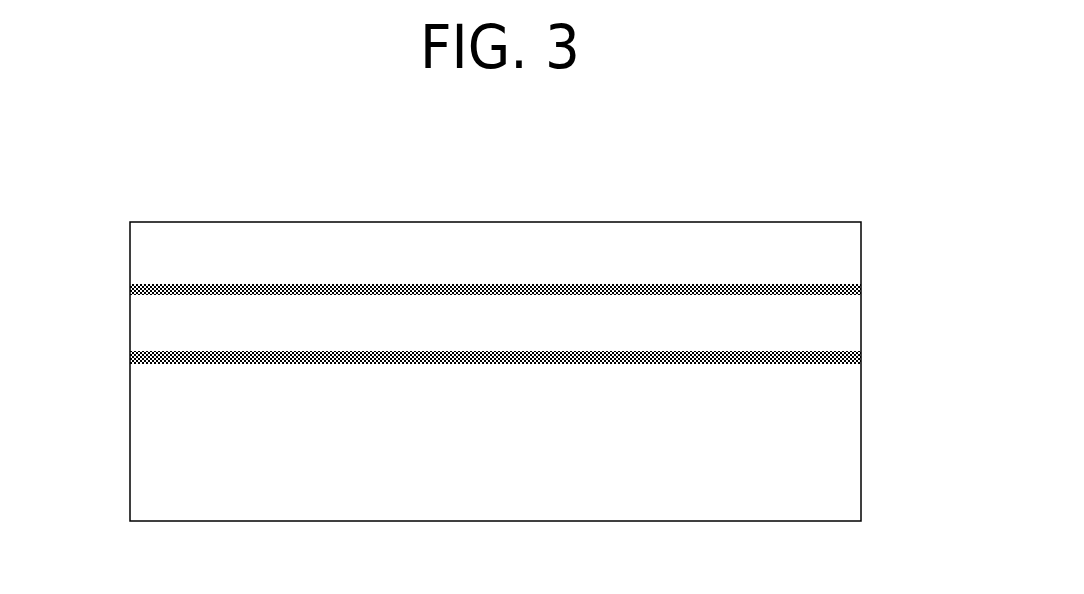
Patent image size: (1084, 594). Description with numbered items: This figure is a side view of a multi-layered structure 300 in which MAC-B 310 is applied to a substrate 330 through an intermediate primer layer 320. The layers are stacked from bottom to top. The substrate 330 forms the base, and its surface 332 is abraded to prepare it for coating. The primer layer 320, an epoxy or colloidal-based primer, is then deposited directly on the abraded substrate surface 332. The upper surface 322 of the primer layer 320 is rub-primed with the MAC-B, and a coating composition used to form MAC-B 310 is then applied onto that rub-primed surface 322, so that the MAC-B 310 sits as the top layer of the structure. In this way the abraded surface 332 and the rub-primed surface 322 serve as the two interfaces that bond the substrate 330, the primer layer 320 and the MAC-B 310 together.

The multi-layered structure 300 is at (501, 308).
The MAC-B 310 is at (862, 247).
The surface of primer layer 322 is at (862, 283).
The primer layer 320 is at (862, 320).
The abraded substrate surface 332 is at (862, 352).
The substrate 330 is at (862, 440).